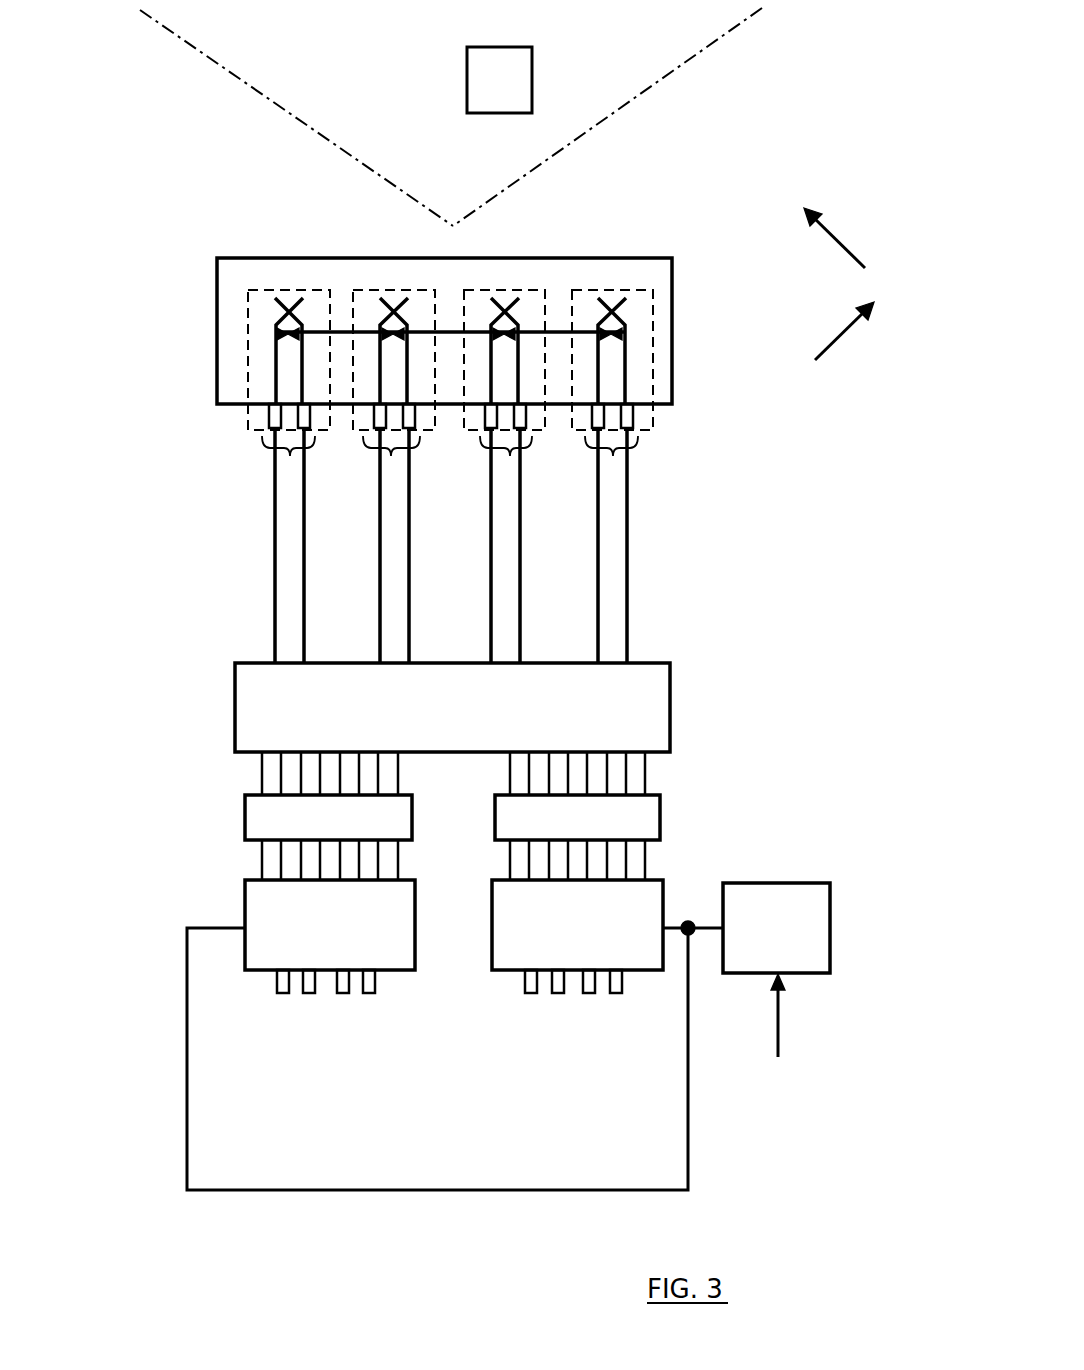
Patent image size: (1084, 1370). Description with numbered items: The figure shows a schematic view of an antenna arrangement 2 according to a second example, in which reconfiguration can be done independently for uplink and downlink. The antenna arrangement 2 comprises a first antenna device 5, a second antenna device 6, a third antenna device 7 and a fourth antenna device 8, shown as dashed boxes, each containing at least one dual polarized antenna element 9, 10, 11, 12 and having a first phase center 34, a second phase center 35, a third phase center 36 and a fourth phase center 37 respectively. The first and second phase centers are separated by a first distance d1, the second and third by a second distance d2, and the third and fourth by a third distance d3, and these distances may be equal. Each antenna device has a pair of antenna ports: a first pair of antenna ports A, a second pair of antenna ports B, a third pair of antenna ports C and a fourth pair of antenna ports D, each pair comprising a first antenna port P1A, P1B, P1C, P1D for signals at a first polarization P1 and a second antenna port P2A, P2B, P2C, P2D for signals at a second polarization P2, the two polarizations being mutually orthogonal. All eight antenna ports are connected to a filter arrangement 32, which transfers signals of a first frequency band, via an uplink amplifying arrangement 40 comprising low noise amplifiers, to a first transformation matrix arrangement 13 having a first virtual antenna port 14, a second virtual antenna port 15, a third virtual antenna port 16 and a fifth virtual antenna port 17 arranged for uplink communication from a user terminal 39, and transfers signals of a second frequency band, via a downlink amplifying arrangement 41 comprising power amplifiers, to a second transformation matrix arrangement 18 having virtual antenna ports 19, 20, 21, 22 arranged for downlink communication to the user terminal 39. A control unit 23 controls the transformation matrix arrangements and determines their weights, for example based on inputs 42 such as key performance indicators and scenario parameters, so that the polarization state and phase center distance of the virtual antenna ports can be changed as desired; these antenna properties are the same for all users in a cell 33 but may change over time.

The first antenna arrangement 2 is at (227, 272).
The first antenna device 5 is at (247, 325).
The second antenna device 6 is at (382, 287).
The third antenna device 7 is at (532, 287).
The fourth antenna device 8 is at (660, 320).
The dual polarized antenna element 9 is at (287, 294).
The dual polarized antenna element 10 is at (393, 294).
The dual polarized antenna element 11 is at (504, 294).
The dual polarized antenna element 12 is at (611, 294).
The first transformation matrix arrangement 13 is at (310, 943).
The first virtual antenna port 14 is at (283, 993).
The second virtual antenna port 15 is at (313, 993).
The third virtual antenna port 16 is at (343, 993).
The fifth virtual antenna port 17 is at (370, 993).
The second transformation matrix arrangement 18 is at (560, 940).
The virtual antenna port 19 is at (531, 993).
The virtual antenna port 20 is at (558, 993).
The virtual antenna port 21 is at (589, 993).
The virtual antenna port 22 is at (616, 993).
The control unit 23 is at (759, 943).
The filter arrangement 32 is at (435, 732).
The cell 33 is at (225, 30).
The first phase center 34 is at (280, 338).
The second phase center 35 is at (384, 342).
The third phase center 36 is at (520, 343).
The fourth phase center 37 is at (633, 337).
The user terminal 39 is at (482, 90).
The uplink amplifying arrangement 40 is at (312, 835).
The downlink amplifying arrangement 41 is at (561, 835).
The inputs 42 is at (781, 1012).
The first distance d1 is at (343, 332).
The second distance d2 is at (451, 332).
The third distance d3 is at (557, 332).
The first polarization P1 is at (845, 335).
The second polarization P2 is at (848, 250).
The first pair of antenna ports A is at (289, 457).
The second pair of antenna ports B is at (391, 457).
The third pair of antenna ports C is at (510, 457).
The fourth pair of antenna ports D is at (613, 457).
The first antenna port P1A is at (268, 415).
The second antenna port P2A is at (300, 430).
The first antenna port P1B is at (378, 428).
The second antenna port P2B is at (409, 428).
The first antenna port P1C is at (493, 428).
The second antenna port P2C is at (522, 428).
The first antenna port P1D is at (600, 428).
The second antenna port P2D is at (633, 415).